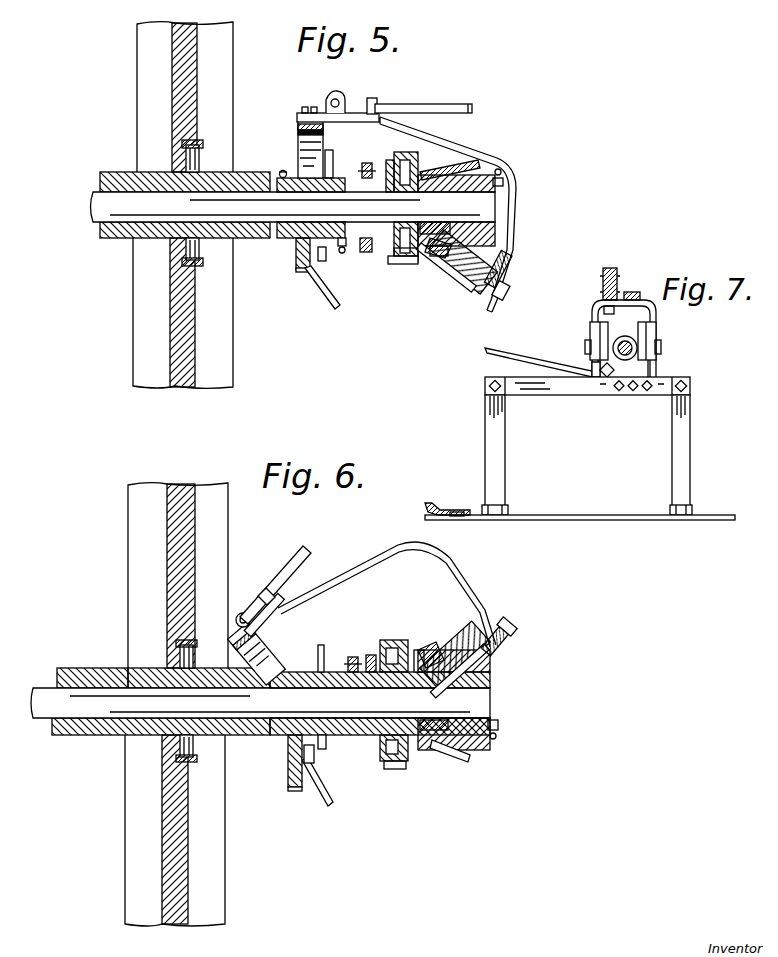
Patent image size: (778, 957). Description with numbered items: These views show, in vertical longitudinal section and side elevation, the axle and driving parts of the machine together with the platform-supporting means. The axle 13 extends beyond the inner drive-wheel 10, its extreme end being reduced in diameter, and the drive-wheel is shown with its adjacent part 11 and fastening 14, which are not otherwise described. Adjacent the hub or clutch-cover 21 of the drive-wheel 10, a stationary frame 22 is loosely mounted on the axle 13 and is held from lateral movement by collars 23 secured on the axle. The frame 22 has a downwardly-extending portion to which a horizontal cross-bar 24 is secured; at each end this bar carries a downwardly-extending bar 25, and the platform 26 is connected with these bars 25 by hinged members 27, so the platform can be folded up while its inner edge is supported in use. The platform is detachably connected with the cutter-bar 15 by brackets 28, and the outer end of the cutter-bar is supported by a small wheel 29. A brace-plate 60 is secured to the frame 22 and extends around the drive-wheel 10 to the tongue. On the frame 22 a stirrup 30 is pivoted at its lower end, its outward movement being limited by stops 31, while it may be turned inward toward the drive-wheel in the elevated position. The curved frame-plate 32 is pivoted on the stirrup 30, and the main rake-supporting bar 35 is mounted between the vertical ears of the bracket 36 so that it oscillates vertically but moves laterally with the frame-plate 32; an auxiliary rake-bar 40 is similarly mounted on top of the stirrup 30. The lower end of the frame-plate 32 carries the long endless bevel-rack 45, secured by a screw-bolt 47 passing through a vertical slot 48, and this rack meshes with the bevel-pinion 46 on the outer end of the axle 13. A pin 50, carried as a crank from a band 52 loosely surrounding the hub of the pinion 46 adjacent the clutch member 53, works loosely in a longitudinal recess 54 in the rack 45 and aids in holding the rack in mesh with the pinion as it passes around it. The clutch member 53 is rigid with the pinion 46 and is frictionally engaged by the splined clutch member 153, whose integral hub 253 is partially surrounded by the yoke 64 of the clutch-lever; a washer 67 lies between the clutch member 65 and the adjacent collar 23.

In FIG. 5, the inner drive-wheel 10 is at (218, 325).
In FIG. 6, the inner drive-wheel 10 is at (150, 562).
In FIG. 6, the flange plate 11 is at (95, 672).
In FIG. 5, the axle 13 is at (95, 195).
In FIG. 7, the axle 13 is at (640, 346).
In FIG. 6, the axle 13 is at (38, 690).
In FIG. 5, the bolt 14 is at (186, 168).
In FIG. 6, the bolt 14 is at (168, 668).
In FIG. 7, the cutter-bar 15 is at (456, 518).
In FIG. 5, the hub or clutch-cover 21 is at (240, 178).
In FIG. 6, the hub or clutch-cover 21 is at (240, 737).
In FIG. 5, the stationary frame 22 is at (296, 262).
In FIG. 7, the stationary frame 22 is at (648, 368).
In FIG. 6, the stationary frame 22 is at (288, 760).
In FIG. 5, the collars 23 is at (338, 178).
In FIG. 6, the collars 23 is at (328, 745).
In FIG. 5, the cross-bar 24 is at (296, 272).
In FIG. 7, the cross-bar 24 is at (566, 392).
In FIG. 6, the cross-bar 24 is at (295, 791).
In FIG. 5, the downwardly-extending bar 25 is at (330, 294).
In FIG. 7, the downwardly-extending bar 25 is at (498, 450).
In FIG. 6, the downwardly-extending bar 25 is at (318, 805).
In FIG. 7, the platform 26 is at (565, 522).
In FIG. 7, the hinged members 27 is at (508, 508).
In FIG. 7, the brackets 28 is at (462, 508).
In FIG. 5, the small wheel 29 is at (326, 150).
In FIG. 5, the stirrup 30 is at (324, 137).
In FIG. 7, the stirrup 30 is at (657, 327).
In FIG. 6, the stirrup 30 is at (262, 660).
In FIG. 5, the stops 31 is at (300, 178).
In FIG. 7, the stops 31 is at (592, 336).
In FIG. 6, the stops 31 is at (321, 645).
In FIG. 5, the curved frame-plate 32 is at (503, 156).
In FIG. 7, the curved frame-plate 32 is at (634, 298).
In FIG. 6, the curved frame-plate 32 is at (425, 556).
In FIG. 5, the main rake-supporting bar 35 is at (425, 112).
In FIG. 6, the main rake-supporting bar 35 is at (308, 552).
In FIG. 5, the bracket 36 is at (340, 99).
In FIG. 6, the bracket 36 is at (244, 612).
In FIG. 7, the auxiliary rake-bar 40 is at (612, 268).
In FIG. 5, the endless bevel-rack 45 is at (455, 280).
In FIG. 6, the endless bevel-rack 45 is at (455, 640).
In FIG. 5, the bevel-pinion 46 is at (458, 172).
In FIG. 6, the bevel-pinion 46 is at (448, 748).
In FIG. 5, the screw-bolt 47 is at (508, 292).
In FIG. 5, the vertical slot 48 is at (512, 265).
In FIG. 6, the vertical slot 48 is at (512, 640).
In FIG. 5, the pin 50 is at (388, 256).
In FIG. 6, the pin 50 is at (416, 655).
In FIG. 5, the band 52 is at (426, 178).
In FIG. 6, the band 52 is at (422, 738).
In FIG. 5, the clutch member 53 is at (404, 152).
In FIG. 6, the clutch member 53 is at (396, 762).
In FIG. 5, the longitudinal recess 54 is at (430, 258).
In FIG. 7, the brace-plate 60 is at (492, 352).
In FIG. 5, the yoke 64 is at (366, 163).
In FIG. 6, the yoke 64 is at (352, 662).
In FIG. 5, the clutch member 65 is at (366, 252).
In FIG. 6, the clutch member 65 is at (370, 655).
In FIG. 5, the washer 67 is at (350, 242).
In FIG. 5, the clutch member 153 is at (398, 262).
In FIG. 6, the clutch member 153 is at (388, 769).
In FIG. 5, the hub 253 is at (336, 262).
In FIG. 6, the hub 253 is at (338, 760).